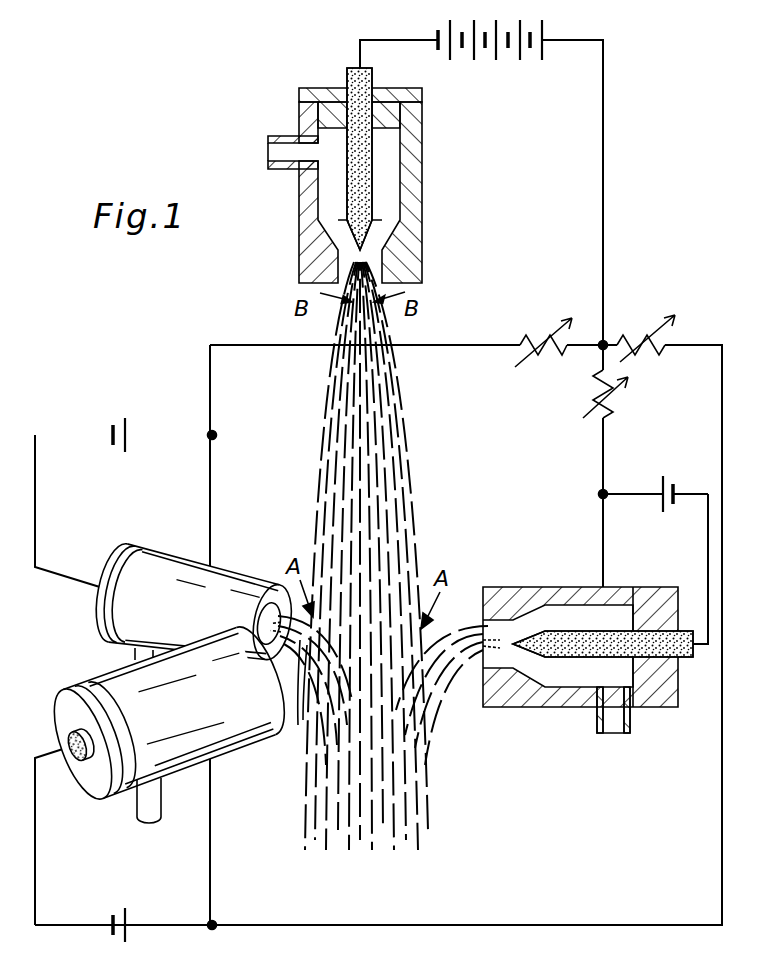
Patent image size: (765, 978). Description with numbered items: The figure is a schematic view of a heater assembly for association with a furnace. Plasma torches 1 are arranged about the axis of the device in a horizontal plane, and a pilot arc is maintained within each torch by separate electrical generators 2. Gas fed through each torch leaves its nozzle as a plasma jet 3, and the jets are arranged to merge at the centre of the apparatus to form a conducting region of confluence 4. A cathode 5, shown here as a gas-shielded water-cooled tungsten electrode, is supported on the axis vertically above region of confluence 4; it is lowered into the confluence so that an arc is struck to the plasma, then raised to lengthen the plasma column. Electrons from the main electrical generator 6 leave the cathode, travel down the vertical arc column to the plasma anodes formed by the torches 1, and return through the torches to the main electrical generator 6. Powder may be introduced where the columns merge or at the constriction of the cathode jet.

The plasma torch 1 is at (238, 578).
The electrical generator 2 is at (126, 432).
The plasma jet 3 is at (490, 642).
The region of confluence 4 is at (372, 668).
The cathode 5 is at (372, 192).
The main electrical generator 6 is at (526, 77).